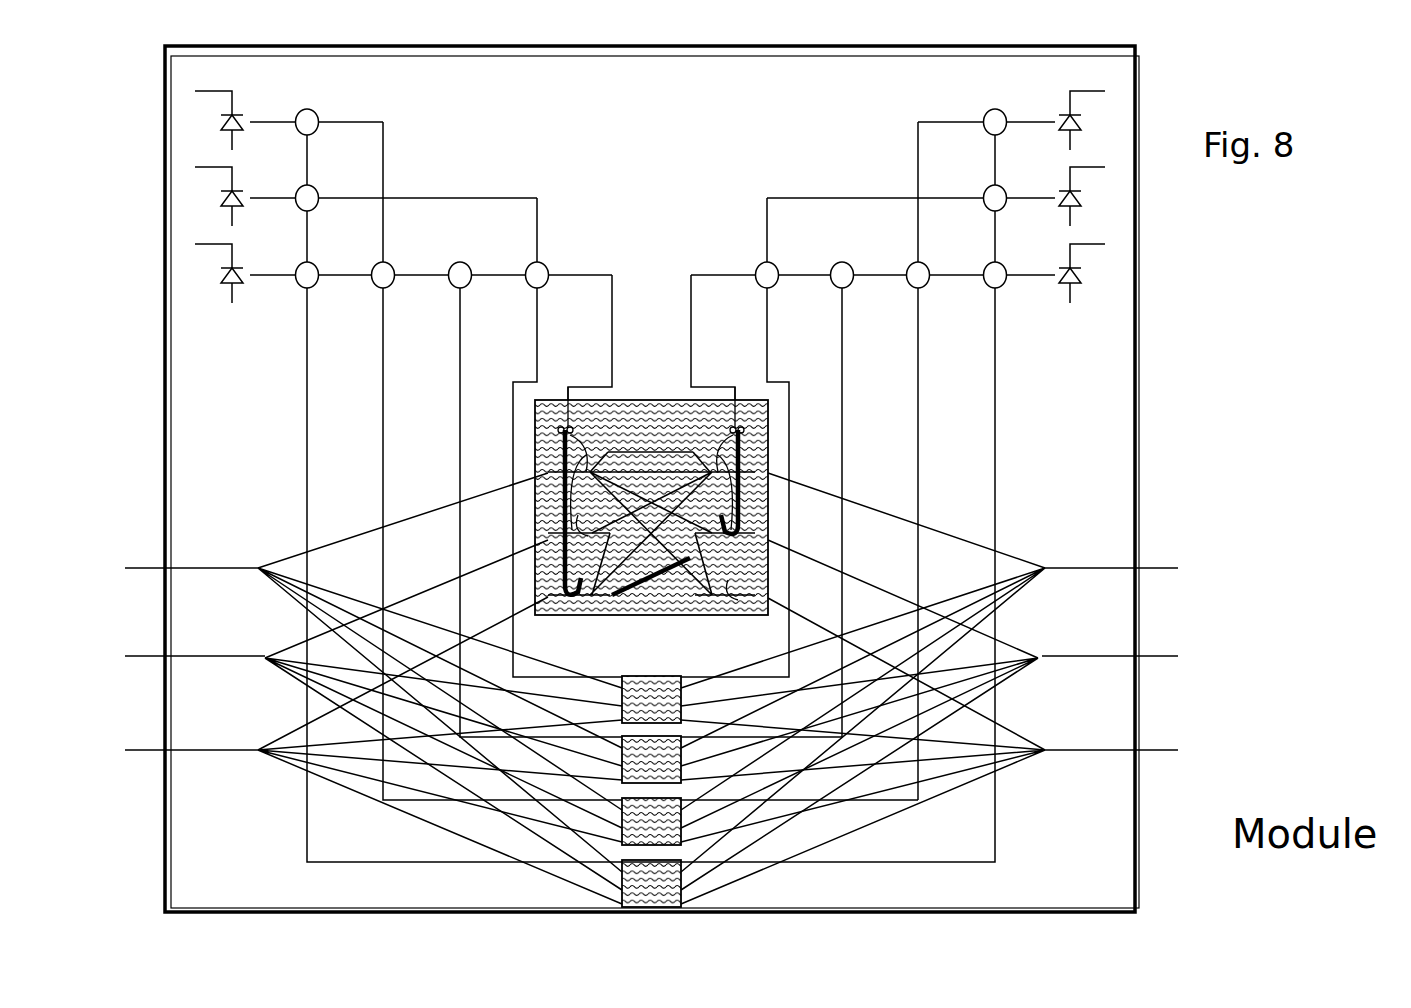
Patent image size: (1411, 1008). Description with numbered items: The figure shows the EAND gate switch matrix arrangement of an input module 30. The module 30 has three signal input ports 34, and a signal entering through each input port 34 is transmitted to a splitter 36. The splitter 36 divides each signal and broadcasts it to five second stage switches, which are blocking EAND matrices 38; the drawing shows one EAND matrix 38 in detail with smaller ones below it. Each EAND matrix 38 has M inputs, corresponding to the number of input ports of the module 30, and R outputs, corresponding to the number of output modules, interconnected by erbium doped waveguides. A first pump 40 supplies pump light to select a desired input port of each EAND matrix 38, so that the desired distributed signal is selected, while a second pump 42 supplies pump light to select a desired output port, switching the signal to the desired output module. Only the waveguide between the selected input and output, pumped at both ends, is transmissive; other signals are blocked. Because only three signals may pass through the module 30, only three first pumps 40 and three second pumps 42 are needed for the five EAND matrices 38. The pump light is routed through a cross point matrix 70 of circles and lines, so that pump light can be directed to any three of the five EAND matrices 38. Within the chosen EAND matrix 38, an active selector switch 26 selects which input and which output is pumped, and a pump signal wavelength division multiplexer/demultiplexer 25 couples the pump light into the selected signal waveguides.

The input module 30 is at (1168, 322).
The signal input ports 34 is at (147, 567).
The splitter 36 is at (270, 560).
The cross point matrix 70 is at (428, 165).
The first pump 40 is at (232, 304).
The second pump 42 is at (1054, 304).
The EAND matrix 38 is at (676, 398).
The active selector switch 26 is at (563, 430).
The pump signal wavelength division multiplexer/demultiplexer 25 is at (542, 540).